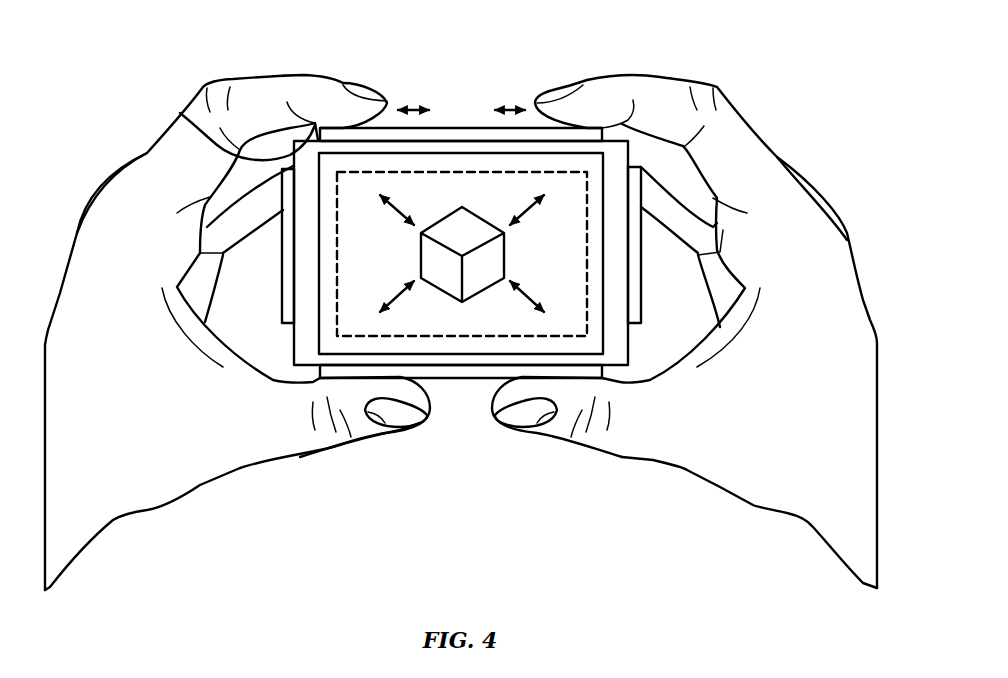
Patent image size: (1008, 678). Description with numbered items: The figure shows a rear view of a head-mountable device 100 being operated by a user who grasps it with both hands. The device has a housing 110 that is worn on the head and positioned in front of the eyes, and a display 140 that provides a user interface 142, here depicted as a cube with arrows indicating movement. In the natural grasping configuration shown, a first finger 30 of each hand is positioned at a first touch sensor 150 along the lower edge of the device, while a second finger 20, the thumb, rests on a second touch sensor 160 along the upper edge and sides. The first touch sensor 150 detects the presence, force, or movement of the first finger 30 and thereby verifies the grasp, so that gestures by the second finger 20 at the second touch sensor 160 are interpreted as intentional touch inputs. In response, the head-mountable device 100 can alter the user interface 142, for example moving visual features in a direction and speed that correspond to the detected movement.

The head-mountable device 100 is at (542, 233).
The housing 110 is at (180, 113).
The second finger 20 is at (328, 106).
The first finger 30 is at (423, 420).
The display 140 is at (598, 184).
The user interface 142 is at (565, 190).
The first touch sensor 150 is at (463, 377).
The second touch sensor 160 is at (443, 128).